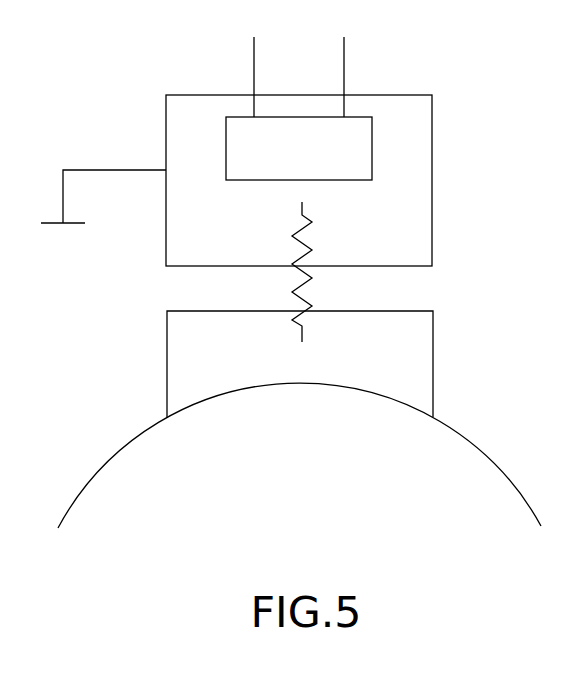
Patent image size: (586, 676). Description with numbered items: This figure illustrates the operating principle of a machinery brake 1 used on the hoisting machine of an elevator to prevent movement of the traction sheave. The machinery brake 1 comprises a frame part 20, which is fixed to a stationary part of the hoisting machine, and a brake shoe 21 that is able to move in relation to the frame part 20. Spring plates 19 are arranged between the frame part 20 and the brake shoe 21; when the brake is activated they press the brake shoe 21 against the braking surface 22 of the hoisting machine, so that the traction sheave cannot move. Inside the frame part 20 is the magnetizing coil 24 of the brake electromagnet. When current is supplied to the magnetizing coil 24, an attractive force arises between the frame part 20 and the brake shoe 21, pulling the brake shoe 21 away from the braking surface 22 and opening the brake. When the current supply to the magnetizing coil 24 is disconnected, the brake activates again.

The machinery brake 1 is at (70, 92).
The spring plates 19 is at (312, 282).
The frame part 20 is at (432, 185).
The brake shoe 21 is at (433, 360).
The braking surface 22 is at (118, 452).
The magnetizing coil 24 is at (372, 148).